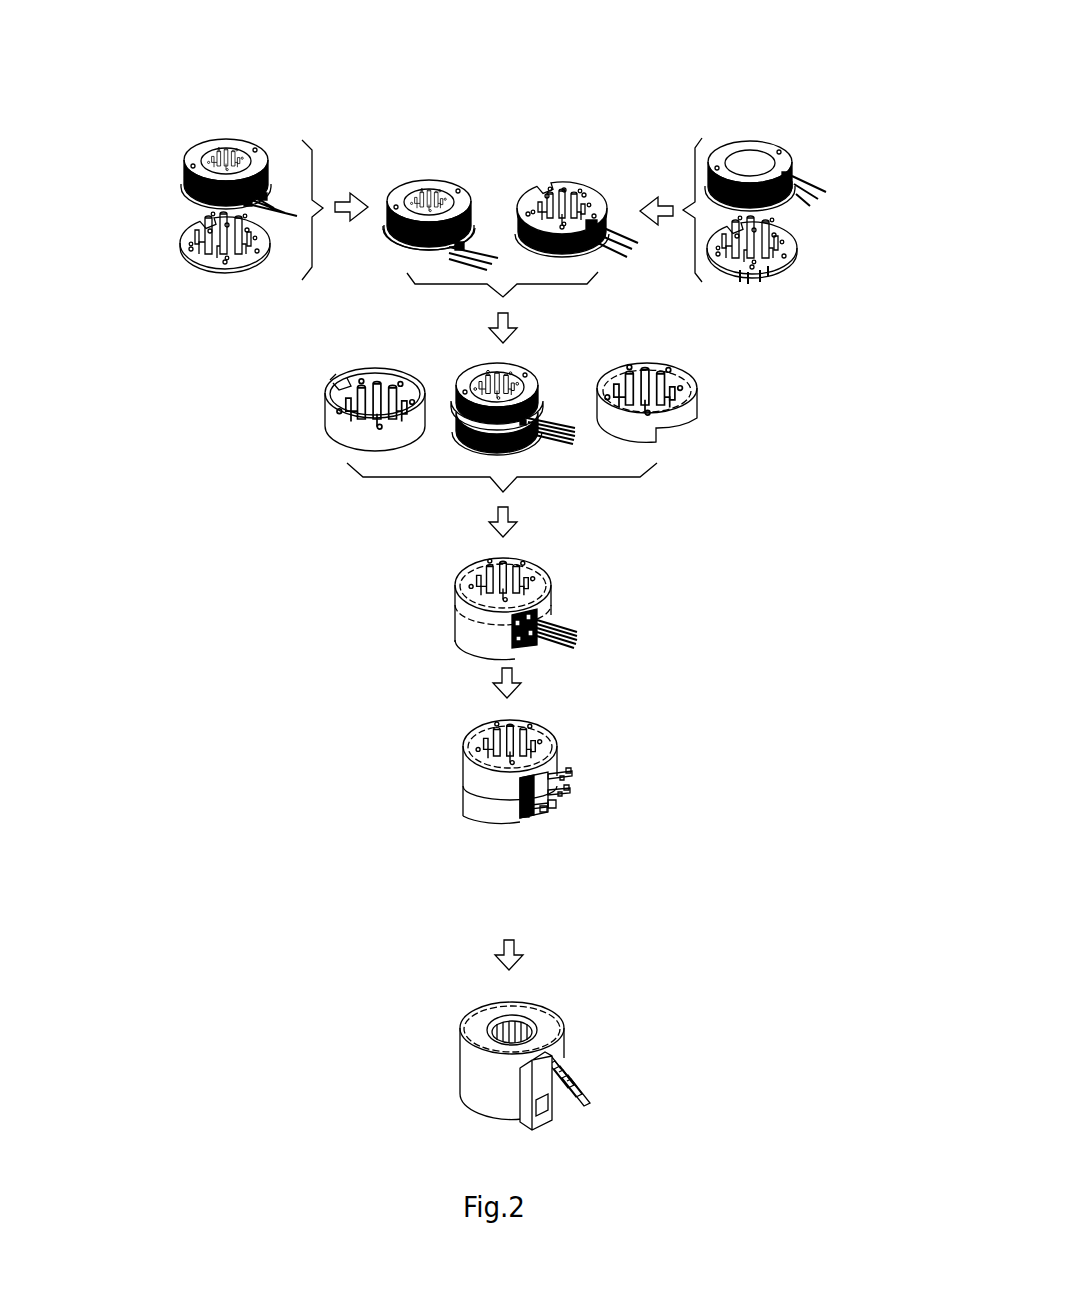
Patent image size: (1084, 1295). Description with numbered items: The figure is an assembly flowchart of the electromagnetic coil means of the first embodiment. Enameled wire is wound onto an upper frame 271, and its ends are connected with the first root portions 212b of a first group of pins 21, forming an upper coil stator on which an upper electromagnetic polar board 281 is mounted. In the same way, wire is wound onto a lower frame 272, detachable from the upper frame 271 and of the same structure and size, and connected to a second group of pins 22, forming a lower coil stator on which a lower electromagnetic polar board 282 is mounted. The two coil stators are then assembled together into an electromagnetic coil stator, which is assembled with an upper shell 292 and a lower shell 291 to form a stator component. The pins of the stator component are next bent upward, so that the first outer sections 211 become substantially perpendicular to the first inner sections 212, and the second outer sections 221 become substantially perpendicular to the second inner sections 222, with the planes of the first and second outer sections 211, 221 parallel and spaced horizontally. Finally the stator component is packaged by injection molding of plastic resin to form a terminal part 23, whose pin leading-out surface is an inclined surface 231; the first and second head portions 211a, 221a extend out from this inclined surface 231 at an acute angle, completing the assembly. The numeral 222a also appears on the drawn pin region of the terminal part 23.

The first group of pins 21 is at (297, 216).
The second group of pins 22 is at (828, 198).
The upper frame 271 is at (188, 152).
The lower frame 272 is at (758, 148).
The upper electromagnetic polar board 281 is at (188, 228).
The lower electromagnetic polar board 282 is at (790, 237).
The lower shell 291 is at (325, 408).
The upper shell 292 is at (690, 403).
The first outer sections 211 is at (562, 788).
The first head portions 211a is at (557, 778).
The second outer sections 221 is at (557, 807).
The second head portions 221a is at (560, 797).
The first inner sections 212 is at (553, 814).
The first root portions 212b is at (547, 813).
The second inner sections 222 is at (545, 812).
The second terminal base slot 222a is at (520, 814).
The terminal part 23 is at (550, 1080).
The inclined surface 231 is at (547, 1075).